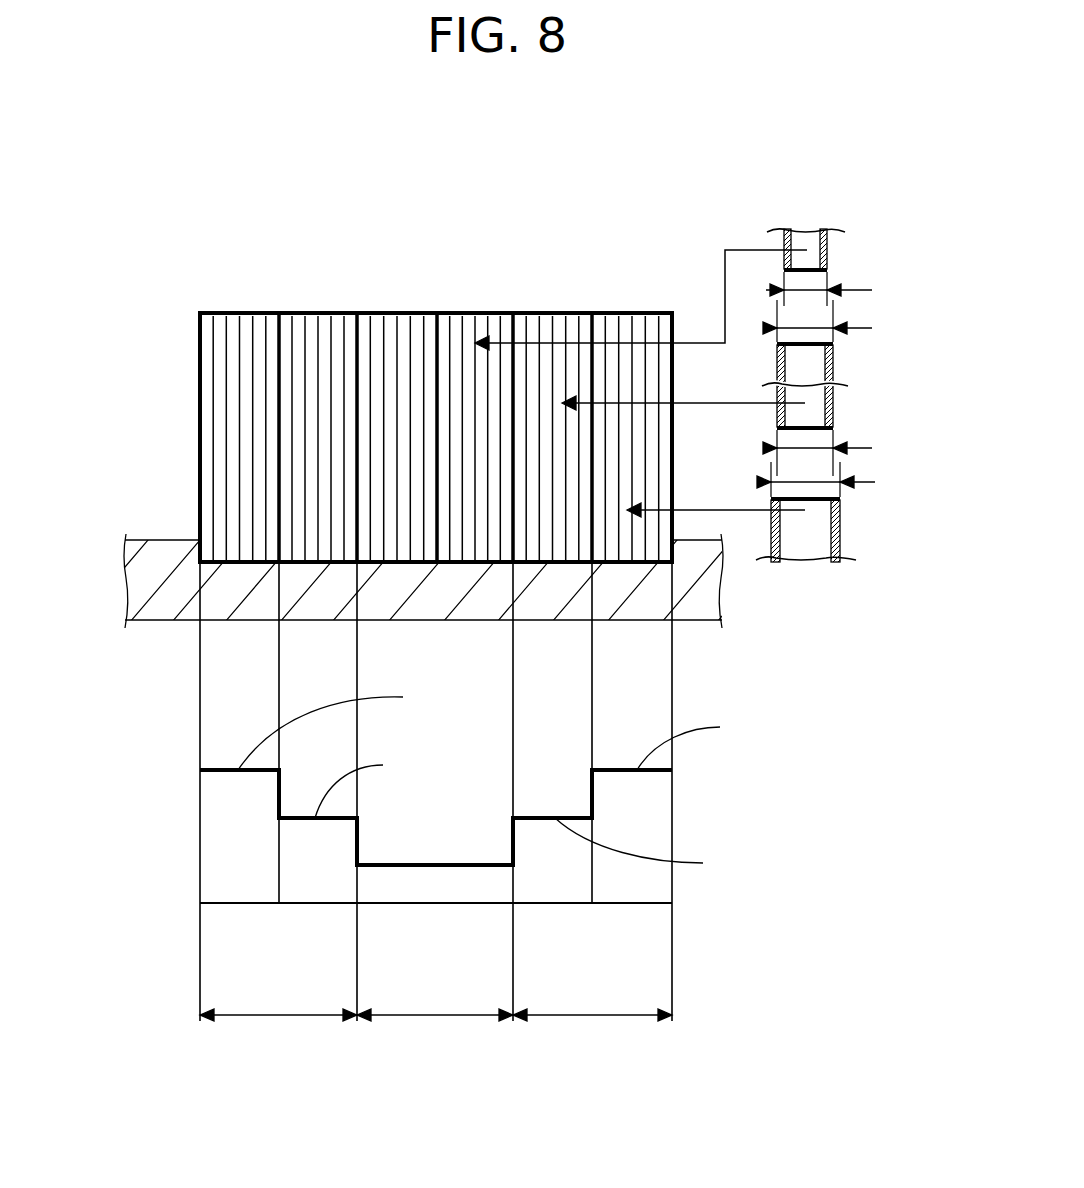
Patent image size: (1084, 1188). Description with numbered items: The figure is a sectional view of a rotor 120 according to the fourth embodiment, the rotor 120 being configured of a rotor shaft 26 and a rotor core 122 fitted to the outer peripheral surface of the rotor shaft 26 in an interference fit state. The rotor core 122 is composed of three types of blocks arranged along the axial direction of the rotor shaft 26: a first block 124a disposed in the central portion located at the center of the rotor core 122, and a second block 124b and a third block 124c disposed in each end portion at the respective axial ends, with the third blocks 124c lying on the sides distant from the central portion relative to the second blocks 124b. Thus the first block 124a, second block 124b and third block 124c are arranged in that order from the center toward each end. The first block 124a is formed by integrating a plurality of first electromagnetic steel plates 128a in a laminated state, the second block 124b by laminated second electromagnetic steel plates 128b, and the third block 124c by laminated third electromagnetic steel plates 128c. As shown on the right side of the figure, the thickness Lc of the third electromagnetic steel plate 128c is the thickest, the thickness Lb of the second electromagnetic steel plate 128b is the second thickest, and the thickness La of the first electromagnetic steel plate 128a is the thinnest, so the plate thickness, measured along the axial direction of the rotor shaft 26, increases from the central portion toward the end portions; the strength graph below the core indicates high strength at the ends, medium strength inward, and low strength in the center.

The rotor 120 is at (148, 189).
The rotor core 122 is at (574, 242).
The first block 124a is at (513, 313).
The second block 124b is at (279, 313).
The third block 124c is at (200, 313).
The first electromagnetic steel plate 128a is at (848, 247).
The second electromagnetic steel plate 128b is at (864, 389).
The third electromagnetic steel plate 128c is at (866, 531).
The rotor shaft 26 is at (157, 605).